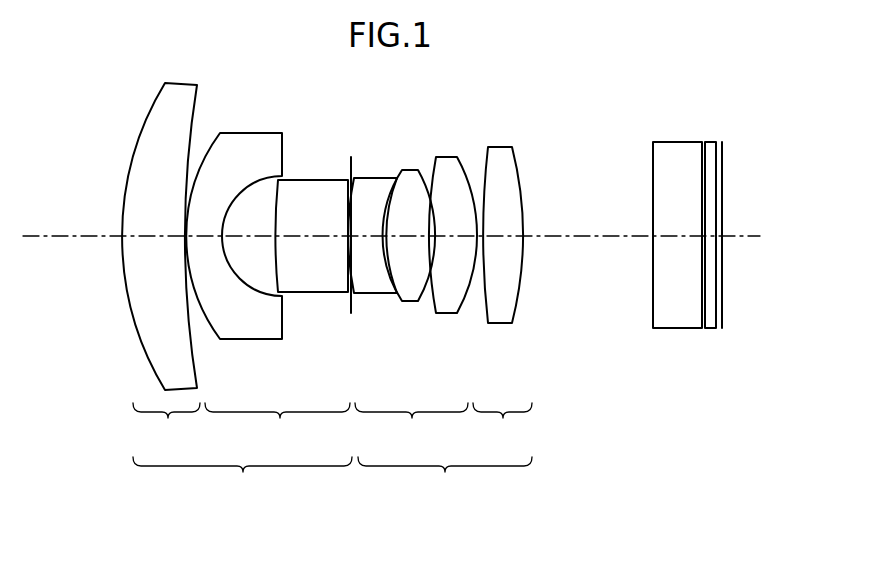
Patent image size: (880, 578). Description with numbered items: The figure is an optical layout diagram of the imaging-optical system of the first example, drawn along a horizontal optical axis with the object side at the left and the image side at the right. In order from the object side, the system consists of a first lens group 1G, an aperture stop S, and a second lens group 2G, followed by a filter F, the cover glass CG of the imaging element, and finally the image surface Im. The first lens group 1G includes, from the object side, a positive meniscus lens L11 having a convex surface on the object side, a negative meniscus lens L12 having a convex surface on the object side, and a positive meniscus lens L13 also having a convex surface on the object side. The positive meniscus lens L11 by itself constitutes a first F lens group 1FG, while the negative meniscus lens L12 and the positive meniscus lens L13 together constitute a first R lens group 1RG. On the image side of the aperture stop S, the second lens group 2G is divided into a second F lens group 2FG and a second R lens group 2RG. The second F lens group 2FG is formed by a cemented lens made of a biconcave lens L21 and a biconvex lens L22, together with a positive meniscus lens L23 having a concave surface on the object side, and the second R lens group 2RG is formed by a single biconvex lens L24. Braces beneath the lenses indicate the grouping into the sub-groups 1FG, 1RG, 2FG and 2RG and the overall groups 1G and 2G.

The positive meniscus lens L11 is at (172, 230).
The negative meniscus lens L12 is at (238, 230).
The positive meniscus lens L13 is at (332, 230).
The aperture stop S is at (350, 165).
The biconcave lens L21 is at (378, 283).
The biconvex lens L22 is at (408, 290).
The positive meniscus lens L23 is at (448, 293).
The biconvex lens L24 is at (500, 297).
The filter F is at (667, 145).
The cover glass CG is at (710, 143).
The image surface Im is at (722, 152).
The first F lens group 1FG is at (161, 263).
The first R lens group 1RG is at (268, 288).
The second F lens group 2FG is at (412, 300).
The second R lens group 2RG is at (502, 295).
The first lens group 1G is at (237, 290).
The second lens group 2G is at (439, 325).